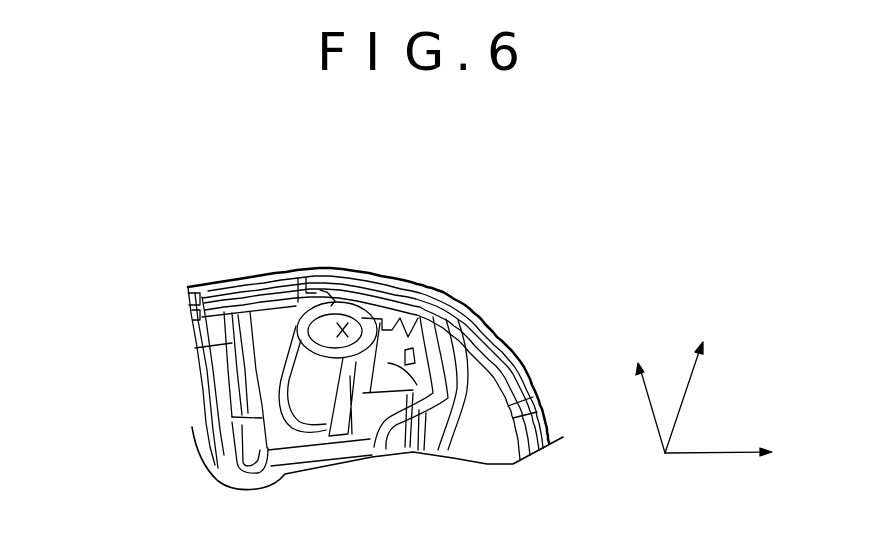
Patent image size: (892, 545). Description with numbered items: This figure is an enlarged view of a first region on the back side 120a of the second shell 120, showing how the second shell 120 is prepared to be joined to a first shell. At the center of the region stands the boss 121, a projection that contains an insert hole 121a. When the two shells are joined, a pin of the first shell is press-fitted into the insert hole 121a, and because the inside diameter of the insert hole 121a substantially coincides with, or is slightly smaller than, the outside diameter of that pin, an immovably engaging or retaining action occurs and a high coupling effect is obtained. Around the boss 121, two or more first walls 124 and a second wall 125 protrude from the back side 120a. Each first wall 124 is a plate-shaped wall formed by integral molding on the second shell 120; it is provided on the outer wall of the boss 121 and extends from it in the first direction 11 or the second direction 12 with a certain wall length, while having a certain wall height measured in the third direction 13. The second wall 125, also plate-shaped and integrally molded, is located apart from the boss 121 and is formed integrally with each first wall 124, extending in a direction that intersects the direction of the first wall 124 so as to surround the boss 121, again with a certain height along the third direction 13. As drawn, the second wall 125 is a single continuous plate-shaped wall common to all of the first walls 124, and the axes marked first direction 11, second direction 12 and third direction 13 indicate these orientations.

The first direction 11 is at (728, 468).
The second direction 12 is at (634, 399).
The third direction 13 is at (701, 388).
The second shell 120 is at (450, 297).
The back side 120a is at (260, 385).
The boss 121 is at (340, 309).
The insert hole 121a is at (383, 314).
The first wall 124 is at (296, 304).
The second wall 125 is at (487, 352).